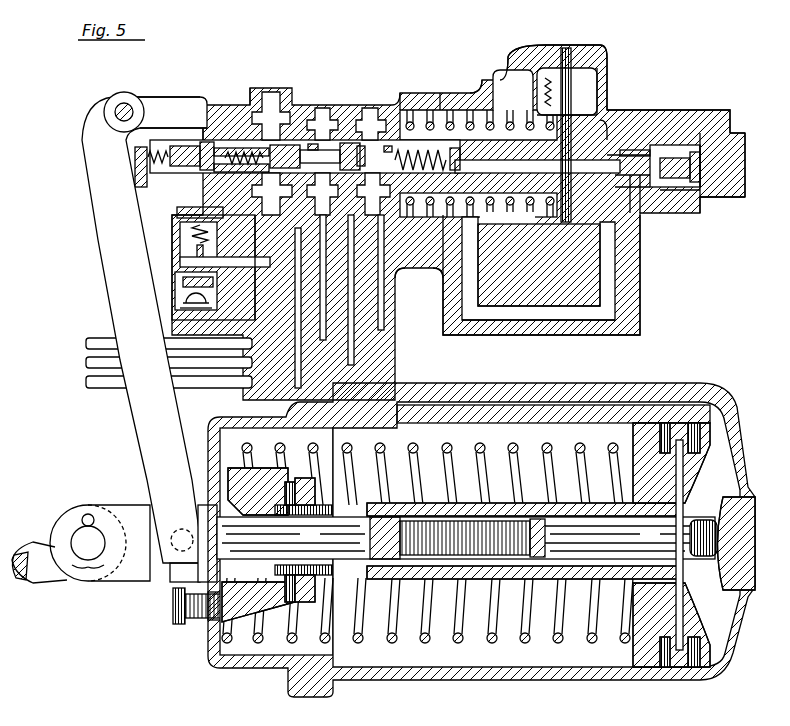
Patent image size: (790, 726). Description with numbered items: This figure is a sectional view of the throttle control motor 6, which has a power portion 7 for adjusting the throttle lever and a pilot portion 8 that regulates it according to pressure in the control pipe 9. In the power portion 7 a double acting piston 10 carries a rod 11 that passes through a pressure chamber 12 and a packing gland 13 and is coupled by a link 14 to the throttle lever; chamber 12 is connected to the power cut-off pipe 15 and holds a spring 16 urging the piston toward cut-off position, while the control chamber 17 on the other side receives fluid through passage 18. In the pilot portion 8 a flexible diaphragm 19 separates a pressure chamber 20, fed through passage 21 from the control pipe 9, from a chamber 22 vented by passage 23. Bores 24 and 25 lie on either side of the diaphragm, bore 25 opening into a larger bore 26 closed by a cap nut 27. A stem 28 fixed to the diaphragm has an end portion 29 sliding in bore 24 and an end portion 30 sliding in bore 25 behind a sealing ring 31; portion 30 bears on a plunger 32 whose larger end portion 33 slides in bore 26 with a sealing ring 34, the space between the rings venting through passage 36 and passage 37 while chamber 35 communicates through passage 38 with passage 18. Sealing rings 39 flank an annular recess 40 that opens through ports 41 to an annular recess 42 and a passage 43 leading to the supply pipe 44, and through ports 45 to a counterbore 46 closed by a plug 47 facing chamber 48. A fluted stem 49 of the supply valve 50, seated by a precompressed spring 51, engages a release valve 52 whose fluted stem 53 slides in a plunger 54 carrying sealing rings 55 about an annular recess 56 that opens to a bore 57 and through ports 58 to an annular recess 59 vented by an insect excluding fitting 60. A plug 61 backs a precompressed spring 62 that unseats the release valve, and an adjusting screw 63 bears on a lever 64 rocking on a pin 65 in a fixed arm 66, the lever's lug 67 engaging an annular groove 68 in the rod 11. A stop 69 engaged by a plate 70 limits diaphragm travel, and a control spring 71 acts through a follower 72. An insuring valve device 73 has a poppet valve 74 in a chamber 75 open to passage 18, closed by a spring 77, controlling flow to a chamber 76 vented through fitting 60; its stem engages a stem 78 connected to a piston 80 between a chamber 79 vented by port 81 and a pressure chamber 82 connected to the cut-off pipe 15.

The throttle control motor 6 is at (637, 308).
The power portion 7 is at (500, 681).
The pilot portion 8 is at (474, 76).
The control pipe 9 is at (90, 341).
The double acting piston 10 is at (672, 668).
The piston rod 11 is at (380, 560).
The pressure chamber 12 is at (415, 672).
The packing gland 13 is at (312, 604).
The link 14 is at (30, 556).
The power cut-off pipe 15 is at (90, 381).
The spring 16 is at (465, 645).
The control chamber 17 is at (722, 612).
The passage 18 is at (325, 340).
The flexible diaphragm 19 is at (578, 78).
The pressure chamber 20 is at (605, 70).
The passage 21 is at (500, 292).
The chamber 22 is at (525, 85).
The passage 23 is at (497, 80).
The bore 24 is at (450, 108).
The bore 25 is at (637, 147).
The larger bore 26 is at (670, 150).
The cap nut 27 is at (735, 155).
The stem 28 is at (478, 105).
The end portion 29 is at (410, 125).
The end portion 30 is at (617, 140).
The sealing ring 31 is at (643, 147).
The plunger 32 is at (670, 178).
The larger end portion 33 is at (710, 113).
The sealing ring 34 is at (683, 143).
The chamber 35 is at (732, 130).
The passage 36 is at (727, 200).
The passage 37 is at (600, 170).
The passage 38 is at (540, 322).
The sealing rings 39 is at (313, 144).
The annular recess 40 is at (452, 150).
The ports 41 is at (378, 138).
The annular recess 42 is at (361, 146).
The passage 43 is at (355, 365).
The fluid pressure supply pipe 44 is at (90, 361).
The ports 45 is at (405, 281).
The counterbore 46 is at (431, 281).
The plug 47 is at (365, 199).
The chamber 48 is at (318, 110).
The fluted stem 49 is at (345, 143).
The fluid pressure supply valve 50 is at (400, 152).
The precompressed spring 51 is at (478, 165).
The release valve 52 is at (305, 150).
The fluted stem 53 is at (283, 150).
The plunger 54 is at (203, 142).
The sealing rings 55 is at (224, 148).
The annular recess 56 is at (279, 194).
The bore 57 is at (205, 105).
The ports 58 is at (248, 105).
The annular recess 59 is at (246, 112).
The insect excluding fitting 60 is at (262, 92).
The plug 61 is at (178, 146).
The precompressed spring 62 is at (215, 195).
The adjusting screw 63 is at (133, 150).
The lever 64 is at (92, 172).
The pin 65 is at (120, 102).
The fixed arm 66 is at (148, 104).
The lug 67 is at (178, 545).
The annular groove 68 is at (185, 575).
The stop 69 is at (608, 112).
The plate 70 is at (603, 86).
The control spring 71 is at (482, 92).
The follower 72 is at (548, 92).
The insuring valve device 73 is at (172, 235).
The poppet valve 74 is at (197, 250).
The chamber 75 is at (190, 232).
The chamber 76 is at (216, 262).
The spring 77 is at (190, 218).
The stem 78 is at (250, 267).
The chamber 79 is at (183, 283).
The piston 80 is at (183, 296).
The port 81 is at (180, 274).
The pressure chamber 82 is at (185, 304).